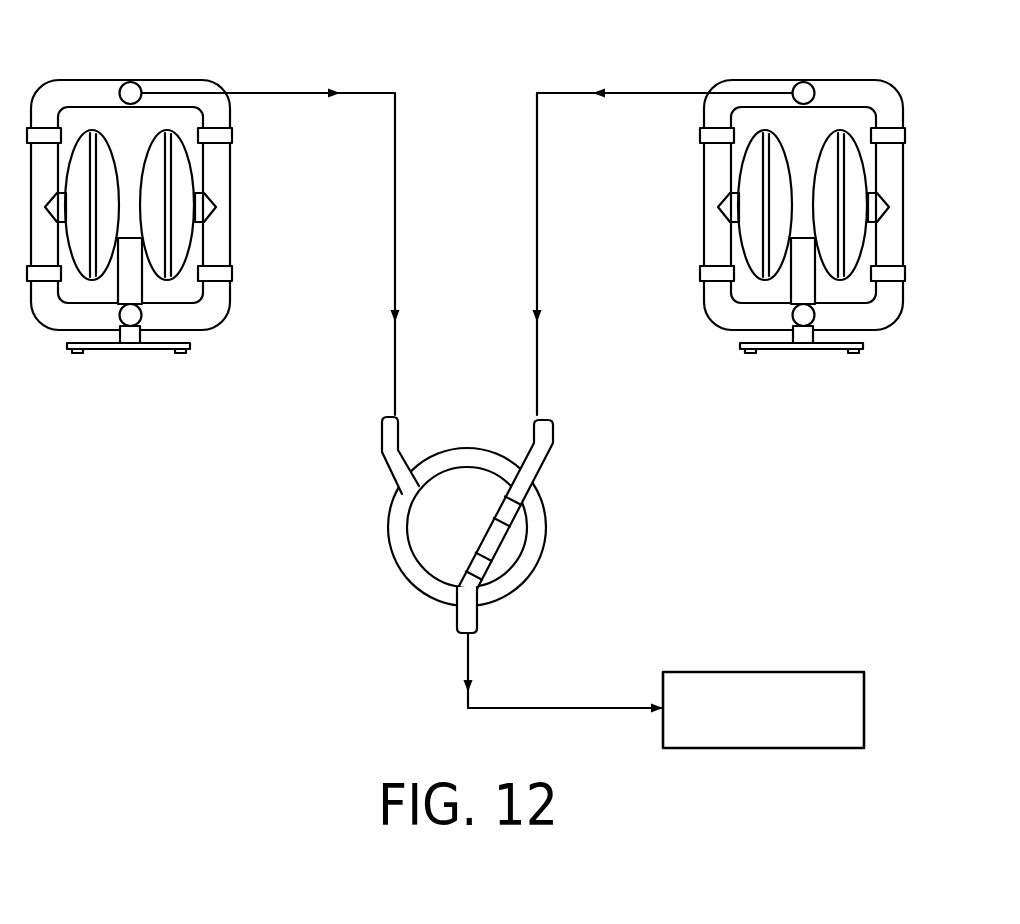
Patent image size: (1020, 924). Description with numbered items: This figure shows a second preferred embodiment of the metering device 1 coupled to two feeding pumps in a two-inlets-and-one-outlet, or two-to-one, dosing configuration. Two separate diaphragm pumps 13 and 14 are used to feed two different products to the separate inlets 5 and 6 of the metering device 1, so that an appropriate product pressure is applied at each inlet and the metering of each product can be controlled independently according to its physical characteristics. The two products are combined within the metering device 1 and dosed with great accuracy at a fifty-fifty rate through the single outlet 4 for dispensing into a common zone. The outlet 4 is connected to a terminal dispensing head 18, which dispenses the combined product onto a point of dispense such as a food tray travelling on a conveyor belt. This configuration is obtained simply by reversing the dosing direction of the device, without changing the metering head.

The metering device 1 is at (398, 596).
The outlet 4 is at (478, 620).
The inlet 5 is at (388, 508).
The inlet 6 is at (555, 421).
The diaphragm pump 13 is at (79, 81).
The diaphragm pump 14 is at (839, 81).
The terminal dispensing head 18 is at (762, 672).